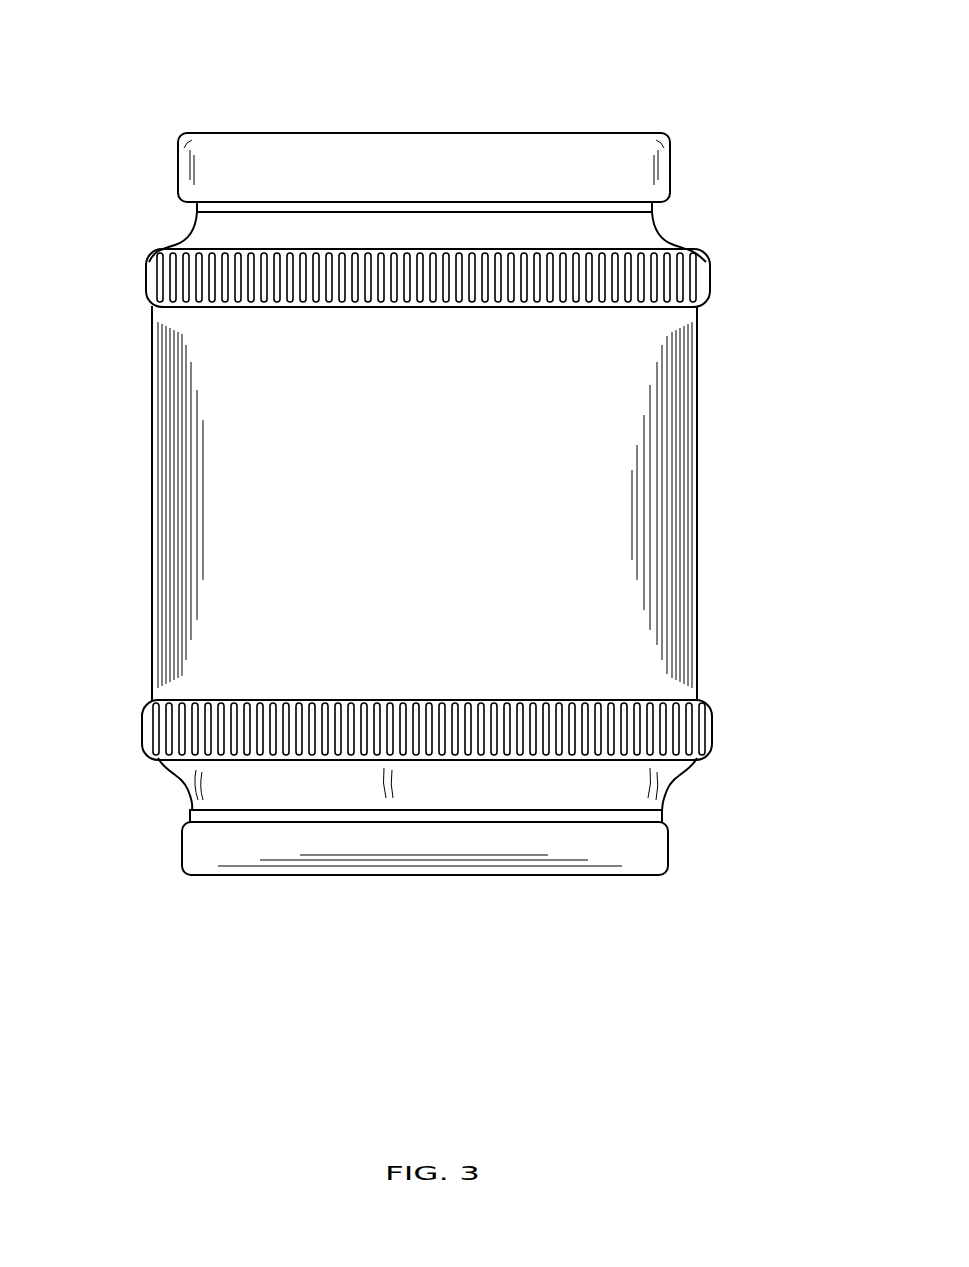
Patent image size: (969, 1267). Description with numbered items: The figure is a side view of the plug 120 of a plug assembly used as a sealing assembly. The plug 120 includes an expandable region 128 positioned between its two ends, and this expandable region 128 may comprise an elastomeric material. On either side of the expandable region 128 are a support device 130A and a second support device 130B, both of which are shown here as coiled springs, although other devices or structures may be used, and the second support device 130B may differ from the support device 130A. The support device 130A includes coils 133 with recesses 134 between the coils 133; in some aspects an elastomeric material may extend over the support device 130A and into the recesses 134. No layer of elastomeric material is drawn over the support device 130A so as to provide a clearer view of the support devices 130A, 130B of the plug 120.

The plug 120 is at (411, 445).
The expandable region 128 is at (710, 488).
The support device 130A is at (407, 217).
The second support device 130B is at (233, 766).
The coils 133 is at (292, 256).
The recesses 134 is at (255, 268).